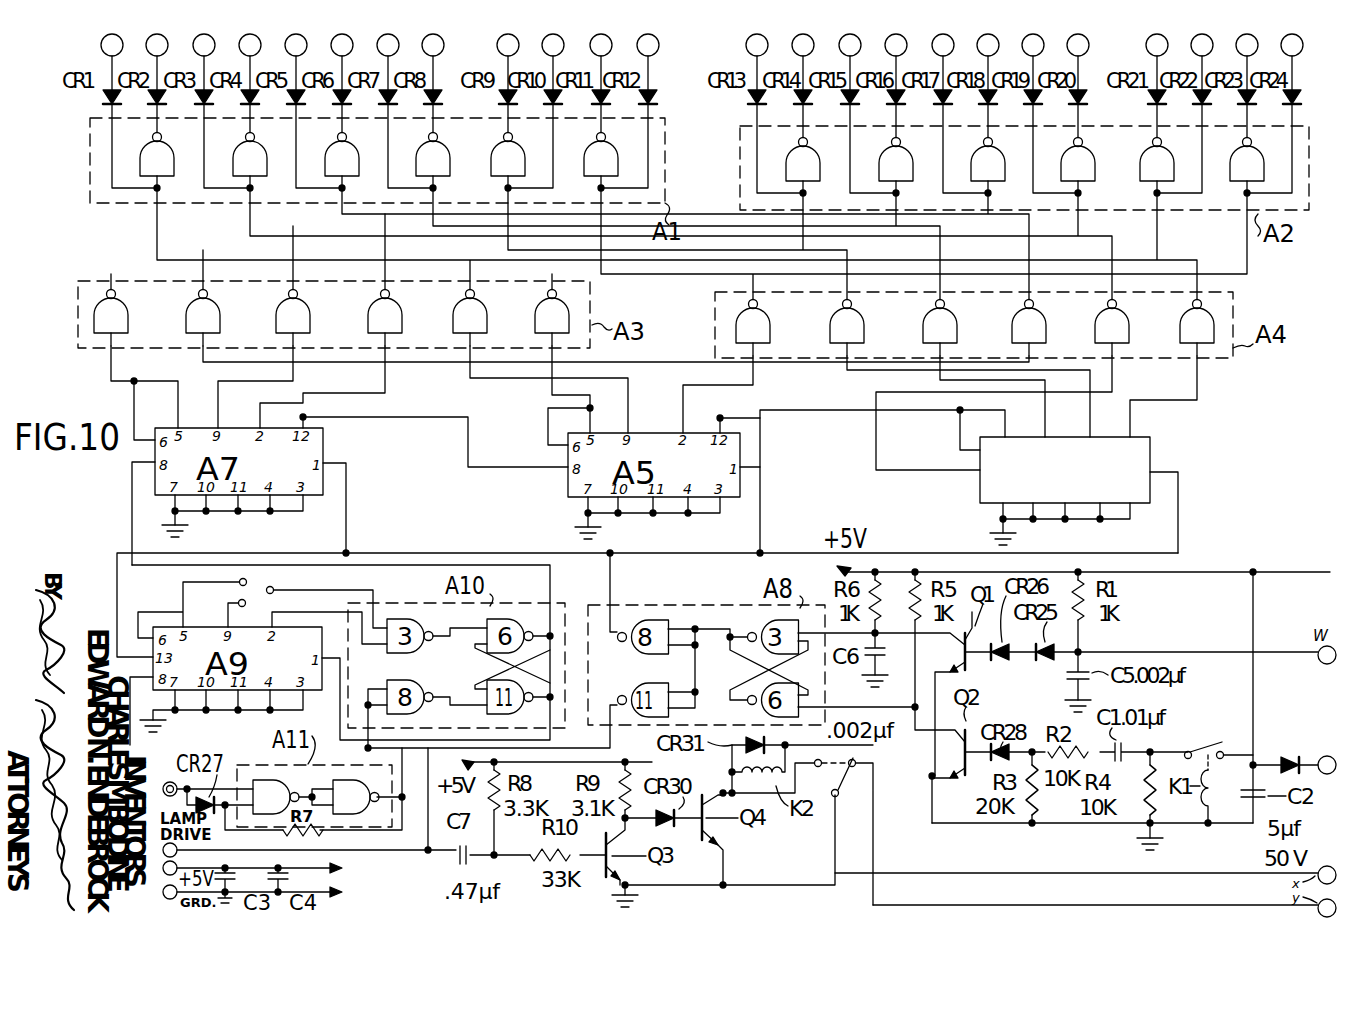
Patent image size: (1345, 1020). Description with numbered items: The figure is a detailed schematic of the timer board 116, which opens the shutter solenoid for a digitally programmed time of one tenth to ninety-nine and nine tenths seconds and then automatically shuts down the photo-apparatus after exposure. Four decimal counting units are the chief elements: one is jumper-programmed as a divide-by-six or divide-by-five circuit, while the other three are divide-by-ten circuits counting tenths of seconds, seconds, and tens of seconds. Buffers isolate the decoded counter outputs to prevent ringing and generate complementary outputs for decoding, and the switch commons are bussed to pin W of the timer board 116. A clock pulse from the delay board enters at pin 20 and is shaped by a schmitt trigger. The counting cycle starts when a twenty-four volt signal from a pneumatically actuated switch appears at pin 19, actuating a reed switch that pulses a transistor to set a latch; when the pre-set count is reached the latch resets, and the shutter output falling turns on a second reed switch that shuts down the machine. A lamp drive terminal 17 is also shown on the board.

The timer board 116 is at (1262, 494).
The lamp drive terminal 17 is at (184, 842).
The pin 19 is at (1316, 762).
The pin 20 is at (172, 782).